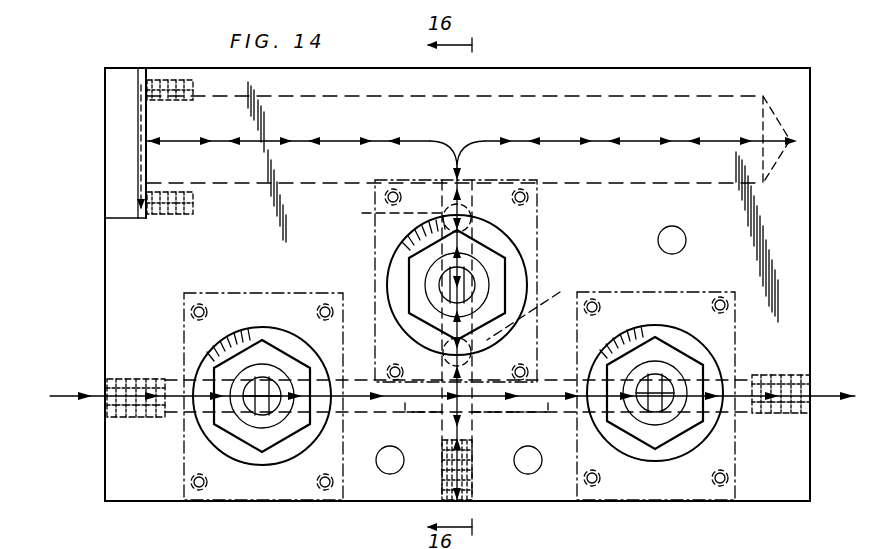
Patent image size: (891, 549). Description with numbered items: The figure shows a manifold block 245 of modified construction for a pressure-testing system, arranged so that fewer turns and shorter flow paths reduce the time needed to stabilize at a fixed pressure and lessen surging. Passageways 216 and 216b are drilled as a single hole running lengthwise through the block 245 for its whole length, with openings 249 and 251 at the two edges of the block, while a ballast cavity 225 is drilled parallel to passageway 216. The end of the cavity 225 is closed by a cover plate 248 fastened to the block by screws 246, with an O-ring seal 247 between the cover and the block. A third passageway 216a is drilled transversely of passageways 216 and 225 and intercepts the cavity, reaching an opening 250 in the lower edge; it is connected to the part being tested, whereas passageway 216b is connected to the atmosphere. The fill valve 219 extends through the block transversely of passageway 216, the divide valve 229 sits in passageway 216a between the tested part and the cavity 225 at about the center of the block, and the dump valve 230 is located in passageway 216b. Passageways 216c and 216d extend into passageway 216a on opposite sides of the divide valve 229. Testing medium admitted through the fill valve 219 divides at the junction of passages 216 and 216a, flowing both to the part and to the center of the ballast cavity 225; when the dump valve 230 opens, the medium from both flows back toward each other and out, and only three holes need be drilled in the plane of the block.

The manifold block 245 is at (80, 106).
The screws 246 is at (150, 70).
The O-ring seal 247 is at (142, 132).
The cover plate 248 is at (112, 178).
The ballast cavity 225 is at (652, 100).
The passageway 216 is at (408, 410).
The third passageway 216a is at (466, 432).
The passageway 216b is at (548, 408).
The passageway 216c is at (376, 224).
The passageway 216d is at (586, 283).
The fill valve 219 is at (250, 390).
The divide valve 229 is at (445, 278).
The dump valve 230 is at (662, 380).
The opening 249 is at (104, 382).
The opening 250 is at (478, 506).
The opening 251 is at (800, 378).